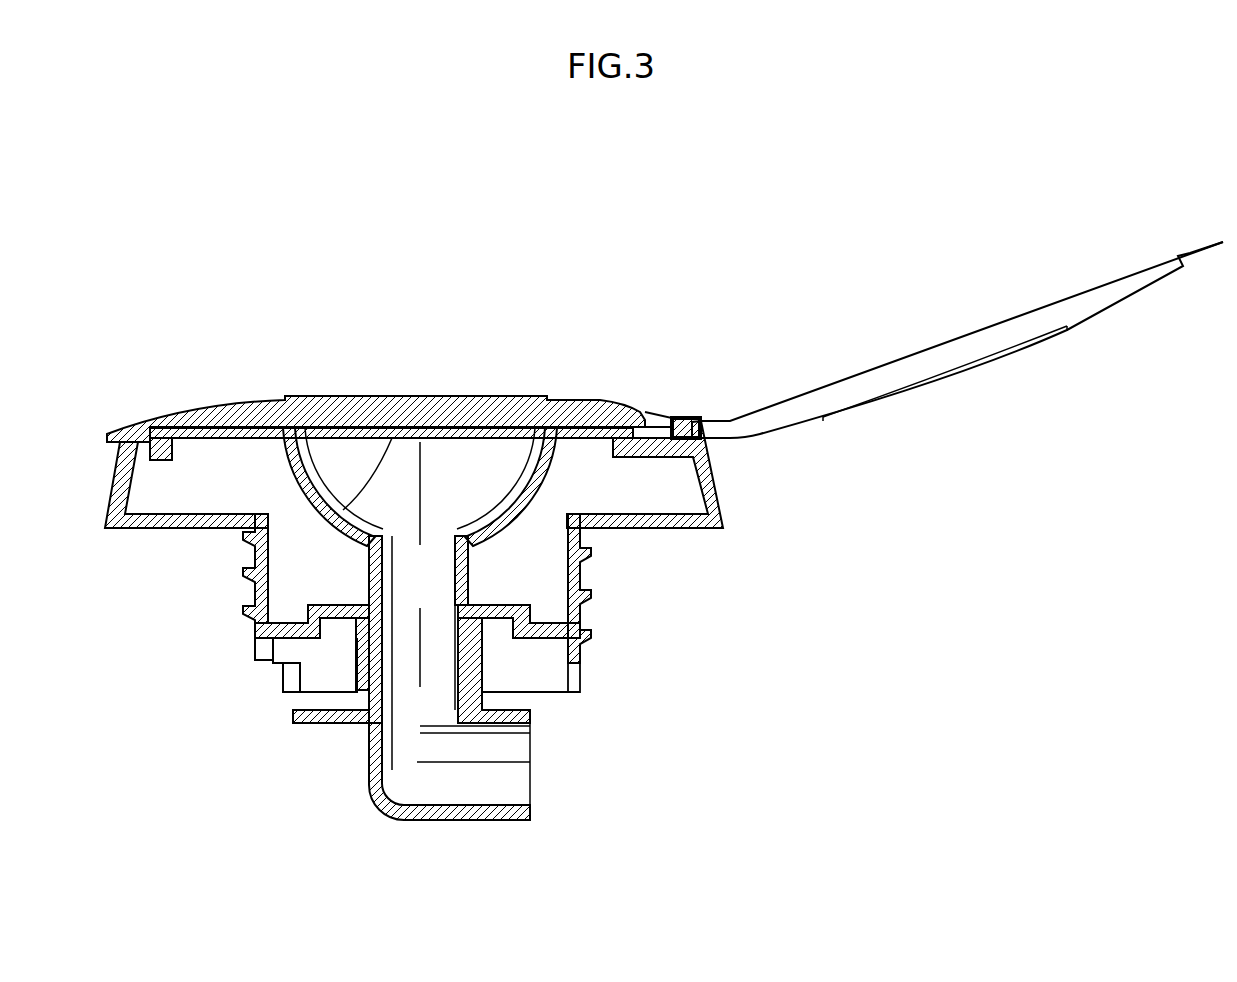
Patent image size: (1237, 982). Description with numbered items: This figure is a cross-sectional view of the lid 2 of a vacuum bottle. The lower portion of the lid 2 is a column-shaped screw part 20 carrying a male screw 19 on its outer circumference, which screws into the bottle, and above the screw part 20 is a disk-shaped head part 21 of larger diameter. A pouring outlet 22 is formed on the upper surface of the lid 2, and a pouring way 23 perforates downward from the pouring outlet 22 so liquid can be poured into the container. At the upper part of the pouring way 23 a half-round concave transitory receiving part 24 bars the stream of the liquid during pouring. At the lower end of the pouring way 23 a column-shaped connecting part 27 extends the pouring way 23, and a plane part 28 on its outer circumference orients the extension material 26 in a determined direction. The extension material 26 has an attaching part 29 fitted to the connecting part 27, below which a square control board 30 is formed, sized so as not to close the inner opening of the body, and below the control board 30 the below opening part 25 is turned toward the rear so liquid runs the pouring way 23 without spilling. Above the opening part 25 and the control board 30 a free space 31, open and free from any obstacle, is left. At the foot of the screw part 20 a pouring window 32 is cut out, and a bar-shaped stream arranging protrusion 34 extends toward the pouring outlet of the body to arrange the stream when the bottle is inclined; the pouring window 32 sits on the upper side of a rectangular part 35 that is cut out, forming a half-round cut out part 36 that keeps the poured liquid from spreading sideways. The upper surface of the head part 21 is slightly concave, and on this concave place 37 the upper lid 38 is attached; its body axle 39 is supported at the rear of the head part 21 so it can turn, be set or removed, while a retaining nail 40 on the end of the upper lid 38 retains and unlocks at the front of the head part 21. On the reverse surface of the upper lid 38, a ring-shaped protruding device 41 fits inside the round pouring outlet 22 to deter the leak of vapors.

The lid 2 is at (702, 240).
The male screw 19 is at (591, 553).
The screw part 20 is at (553, 694).
The head part 21 is at (727, 490).
The pouring outlet 22 is at (323, 398).
The pouring way 23 is at (438, 591).
The transitory receiving part 24 is at (396, 432).
The below opening part 25 is at (532, 775).
The extension material 26 is at (421, 822).
The connecting part 27 is at (356, 683).
The plane part 28 is at (483, 645).
The attaching part 29 is at (482, 670).
The control board 30 is at (357, 727).
The free space 31 is at (278, 712).
The pouring window 32 is at (280, 664).
The stream arranging protrusion 34 is at (300, 727).
The rectangular part 35 is at (282, 685).
The cut out part 36 is at (262, 648).
The concave place 37 is at (590, 411).
The upper lid 38 is at (497, 397).
The body axle 39 is at (691, 418).
The retaining nail 40 is at (157, 450).
The protruding device 41 is at (463, 440).